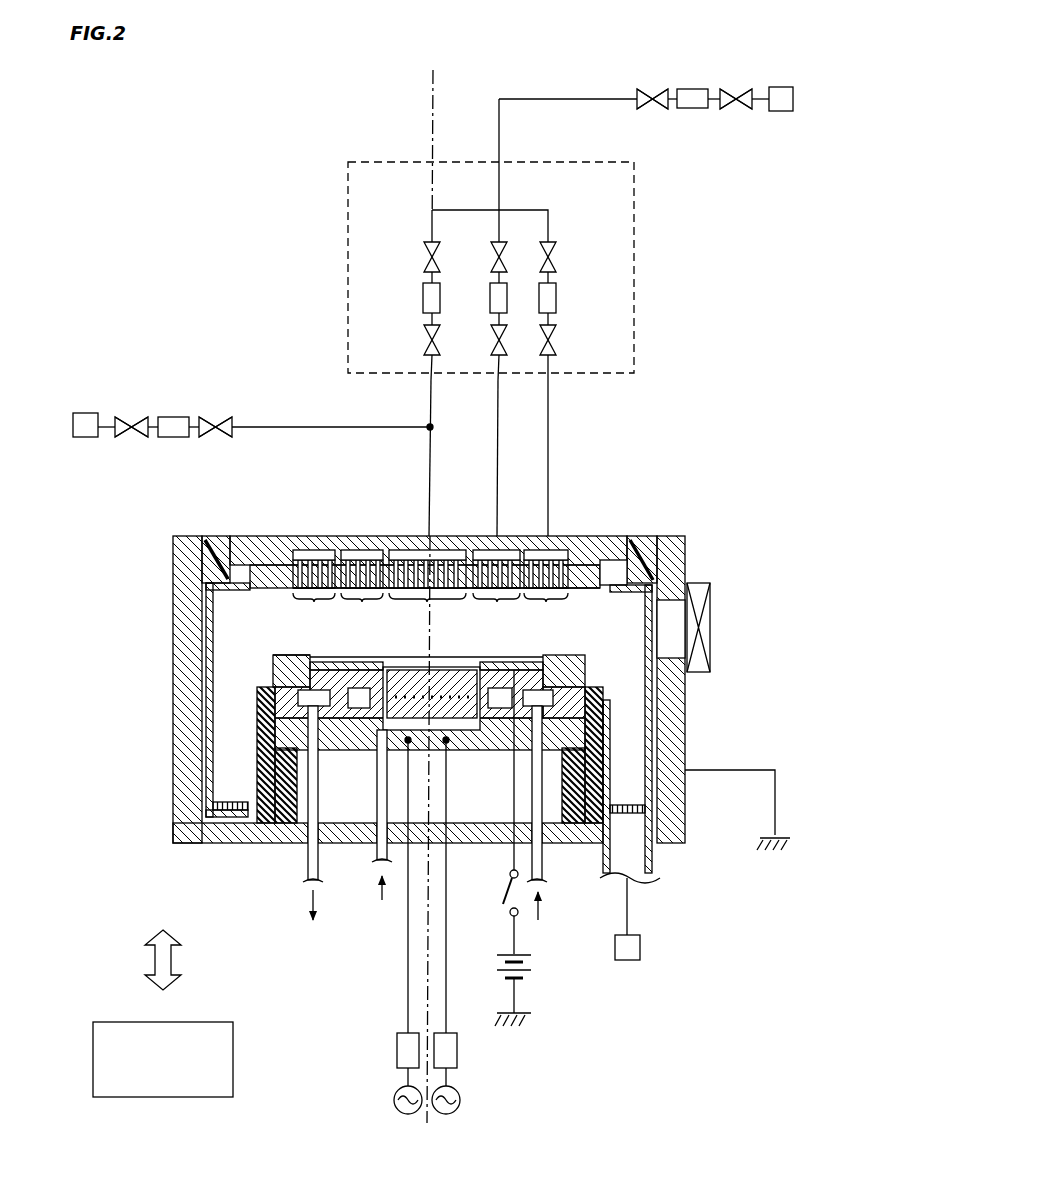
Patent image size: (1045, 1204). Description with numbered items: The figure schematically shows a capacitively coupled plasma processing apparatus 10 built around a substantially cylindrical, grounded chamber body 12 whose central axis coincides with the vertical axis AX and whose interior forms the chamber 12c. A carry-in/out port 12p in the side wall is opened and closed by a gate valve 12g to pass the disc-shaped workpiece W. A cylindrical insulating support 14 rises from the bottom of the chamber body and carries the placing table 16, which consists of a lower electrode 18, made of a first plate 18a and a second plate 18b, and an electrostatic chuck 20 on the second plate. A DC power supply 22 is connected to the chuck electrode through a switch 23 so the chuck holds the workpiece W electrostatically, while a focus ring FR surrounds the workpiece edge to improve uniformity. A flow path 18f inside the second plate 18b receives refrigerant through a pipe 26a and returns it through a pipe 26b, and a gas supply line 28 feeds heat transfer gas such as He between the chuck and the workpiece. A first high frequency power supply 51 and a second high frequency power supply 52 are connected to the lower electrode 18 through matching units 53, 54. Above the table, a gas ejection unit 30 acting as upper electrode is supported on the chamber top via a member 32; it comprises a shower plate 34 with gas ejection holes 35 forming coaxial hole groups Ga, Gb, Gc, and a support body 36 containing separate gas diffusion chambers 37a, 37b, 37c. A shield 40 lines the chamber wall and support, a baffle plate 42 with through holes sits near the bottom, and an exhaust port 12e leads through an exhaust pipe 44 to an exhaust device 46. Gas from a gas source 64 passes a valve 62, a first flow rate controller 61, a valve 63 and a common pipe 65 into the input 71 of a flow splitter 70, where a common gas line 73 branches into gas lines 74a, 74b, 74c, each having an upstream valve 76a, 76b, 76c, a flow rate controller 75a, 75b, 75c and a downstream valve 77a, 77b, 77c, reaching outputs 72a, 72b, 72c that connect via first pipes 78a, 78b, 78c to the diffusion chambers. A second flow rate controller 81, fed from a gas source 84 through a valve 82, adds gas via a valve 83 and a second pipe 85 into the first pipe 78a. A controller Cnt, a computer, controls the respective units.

The plasma processing apparatus 10 is at (186, 127).
The chamber body 12 is at (173, 573).
The chamber 12c is at (241, 628).
The exhaust port 12e is at (633, 836).
The gate valve 12g is at (712, 596).
The carry-in/out port 12p is at (673, 633).
The support 14 is at (592, 700).
The placing table 16 is at (85, 685).
The lower electrode 18 is at (133, 717).
The first plate 18a is at (268, 755).
The second plate 18b is at (278, 702).
The flow path 18f is at (367, 668).
The electrostatic chuck 20 is at (335, 700).
The DC power supply 22 is at (543, 967).
The switch 23 is at (498, 892).
The pipe 26a is at (545, 888).
The pipe 26b is at (308, 869).
The gas supply line 28 is at (378, 808).
The gas ejection unit 30 is at (600, 478).
The member 32 is at (652, 553).
The shower plate 34 is at (603, 548).
The gas ejection holes 35 is at (582, 565).
The support body 36 is at (626, 545).
The gas diffusion chamber 37a is at (410, 550).
The gas diffusion chamber 37b is at (360, 550).
The gas diffusion chamber 37c is at (310, 550).
The shield 40 is at (276, 670).
The baffle plate 42 is at (217, 812).
The exhaust pipe 44 is at (652, 865).
The exhaust device 46 is at (641, 947).
The first high frequency power supply 51 is at (394, 1100).
The second high frequency power supply 52 is at (460, 1100).
The matching unit 53 is at (397, 1058).
The matching unit 54 is at (457, 1058).
The first flow rate controller 61 is at (694, 89).
The valve 62 is at (740, 90).
The valve 63 is at (655, 91).
The gas source 64 is at (781, 112).
The common pipe 65 is at (577, 97).
The flow splitter 70 is at (634, 187).
The input 71 is at (499, 162).
The common gas line 73 is at (499, 192).
The gas line 74a is at (432, 215).
The gas line 74b is at (499, 214).
The gas line 74c is at (548, 215).
The flow rate controller 75a is at (423, 298).
The flow rate controller 75b is at (491, 298).
The flow rate controller 75c is at (557, 298).
The valve 76a is at (424, 256).
The valve 76b is at (492, 258).
The valve 76c is at (556, 256).
The valve 77a is at (424, 342).
The valve 77b is at (492, 342).
The valve 77c is at (556, 342).
The output 72a is at (430, 378).
The output 72b is at (497, 378).
The output 72c is at (549, 378).
The first pipe 78a is at (429, 460).
The first pipe 78b is at (497, 430).
The first pipe 78c is at (549, 432).
The flow rate controller 81 is at (175, 417).
The valve 82 is at (133, 417).
The valve 83 is at (217, 417).
The gas source 84 is at (84, 413).
The second pipe 85 is at (299, 427).
The workpiece W is at (531, 657).
The focus ring FR is at (290, 658).
The axis AX is at (432, 93).
The He gas He is at (380, 901).
The controller Cnt is at (182, 1080).
The gas ejection hole group Ga is at (427, 609).
The gas ejection hole group Gb is at (430, 609).
The gas ejection hole group Gc is at (430, 609).